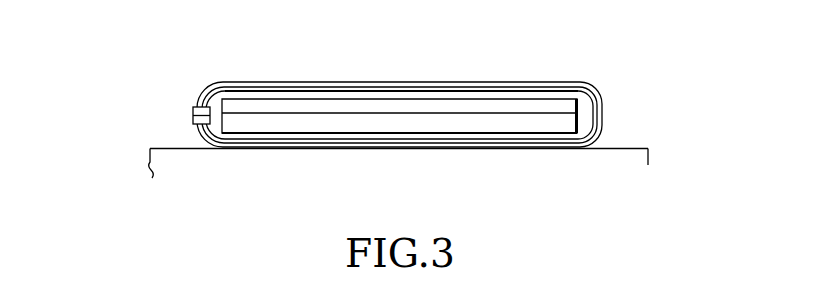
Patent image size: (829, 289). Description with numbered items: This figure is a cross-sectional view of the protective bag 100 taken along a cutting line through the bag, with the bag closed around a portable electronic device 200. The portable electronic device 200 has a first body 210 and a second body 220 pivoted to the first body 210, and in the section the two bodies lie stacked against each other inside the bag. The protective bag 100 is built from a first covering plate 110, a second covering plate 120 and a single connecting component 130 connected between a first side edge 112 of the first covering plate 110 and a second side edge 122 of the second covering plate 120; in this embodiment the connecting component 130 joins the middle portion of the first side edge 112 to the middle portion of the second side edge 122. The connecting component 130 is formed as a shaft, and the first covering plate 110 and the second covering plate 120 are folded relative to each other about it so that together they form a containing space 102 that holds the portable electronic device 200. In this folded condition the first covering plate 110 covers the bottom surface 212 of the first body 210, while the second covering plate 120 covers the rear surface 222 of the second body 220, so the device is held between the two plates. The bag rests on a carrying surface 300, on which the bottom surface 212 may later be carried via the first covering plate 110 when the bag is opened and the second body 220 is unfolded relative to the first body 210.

The protective bag 100 is at (77, 202).
The first covering plate 110 is at (222, 147).
The first side edge 112 is at (560, 144).
The second covering plate 120 is at (208, 90).
The second side edge 122 is at (562, 93).
The connecting component 130 is at (588, 112).
The containing space 102 is at (585, 110).
The portable electronic device 200 is at (213, 185).
The first body 210 is at (319, 124).
The second body 220 is at (245, 108).
The rear surface 222 is at (349, 98).
The bottom surface 212 is at (444, 136).
The carrying surface 300 is at (638, 145).